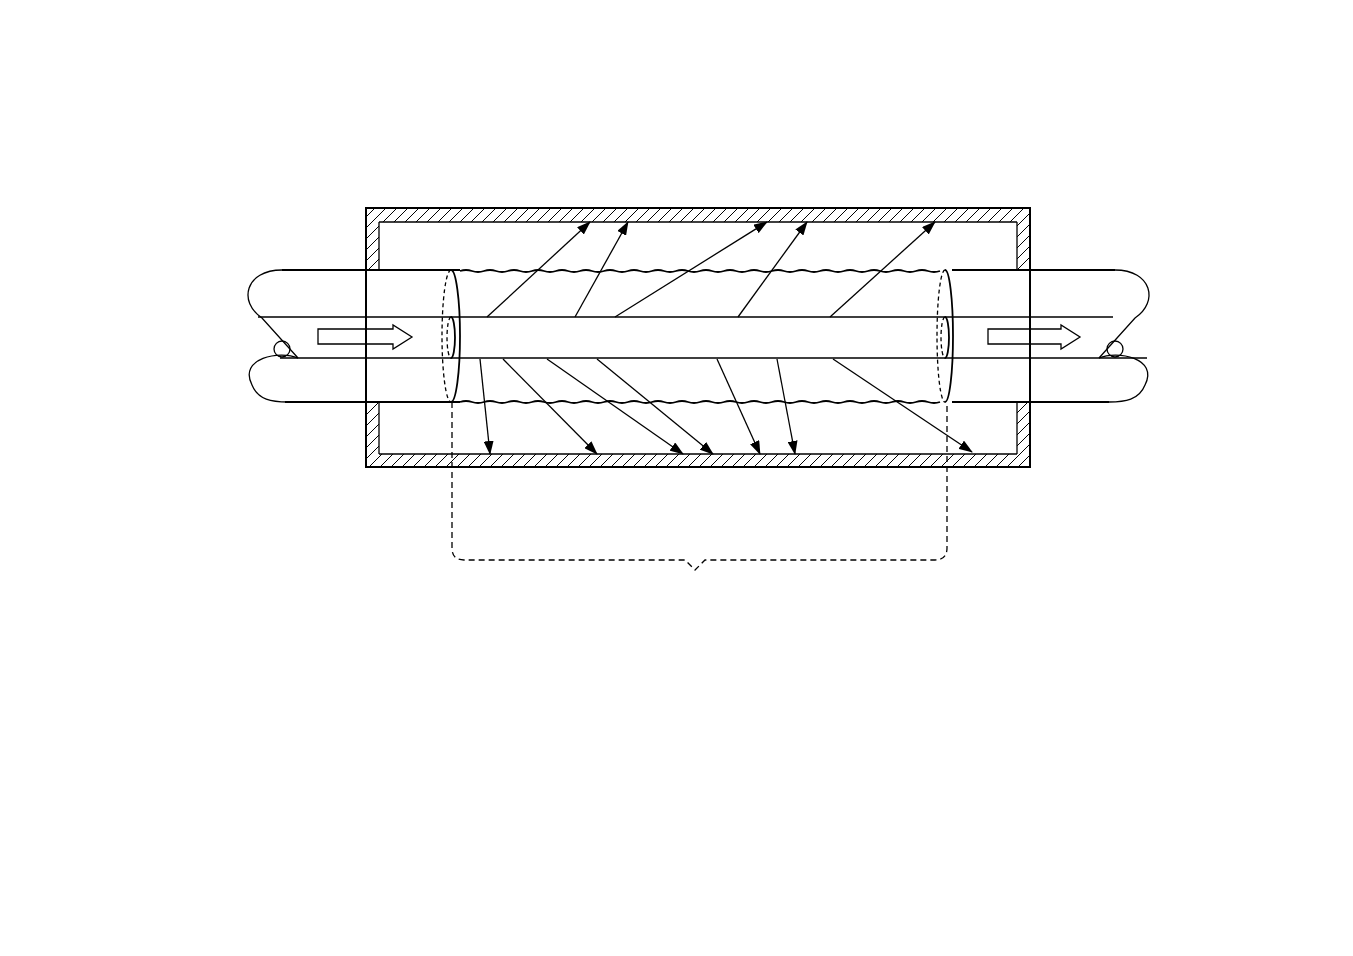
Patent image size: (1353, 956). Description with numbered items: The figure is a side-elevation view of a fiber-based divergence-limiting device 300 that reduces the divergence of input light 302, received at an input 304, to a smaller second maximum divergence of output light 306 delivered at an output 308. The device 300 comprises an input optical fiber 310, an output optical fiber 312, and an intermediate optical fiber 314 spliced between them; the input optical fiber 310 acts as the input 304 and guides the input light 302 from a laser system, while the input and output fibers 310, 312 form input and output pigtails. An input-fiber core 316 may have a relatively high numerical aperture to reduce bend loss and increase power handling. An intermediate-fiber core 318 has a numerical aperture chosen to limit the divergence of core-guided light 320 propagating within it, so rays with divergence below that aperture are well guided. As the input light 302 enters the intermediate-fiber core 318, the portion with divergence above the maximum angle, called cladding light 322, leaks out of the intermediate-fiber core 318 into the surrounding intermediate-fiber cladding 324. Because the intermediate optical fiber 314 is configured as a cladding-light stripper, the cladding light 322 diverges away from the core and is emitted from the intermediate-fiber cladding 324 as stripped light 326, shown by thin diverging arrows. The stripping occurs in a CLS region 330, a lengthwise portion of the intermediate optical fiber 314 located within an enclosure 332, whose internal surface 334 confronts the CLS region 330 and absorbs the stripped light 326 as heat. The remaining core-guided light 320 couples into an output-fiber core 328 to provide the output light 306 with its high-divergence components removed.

The divergence-limiting device 300 is at (1000, 133).
The input light 302 is at (345, 352).
The input 304 is at (212, 298).
The output light 306 is at (1040, 350).
The output 308 is at (1185, 368).
The input optical fiber 310 is at (300, 270).
The output optical fiber 312 is at (1093, 270).
The intermediate optical fiber 314 is at (487, 268).
The input-fiber core 316 is at (280, 325).
The intermediate-fiber core 318 is at (808, 359).
The core-guided light 320 is at (787, 323).
The cladding light 322 is at (592, 291).
The intermediate-fiber cladding 324 is at (517, 392).
The stripped light 326 is at (704, 254).
The output-fiber core 328 is at (1110, 347).
The CLS region 330 is at (700, 562).
The enclosure 332 is at (578, 208).
The internal surface 334 is at (902, 437).